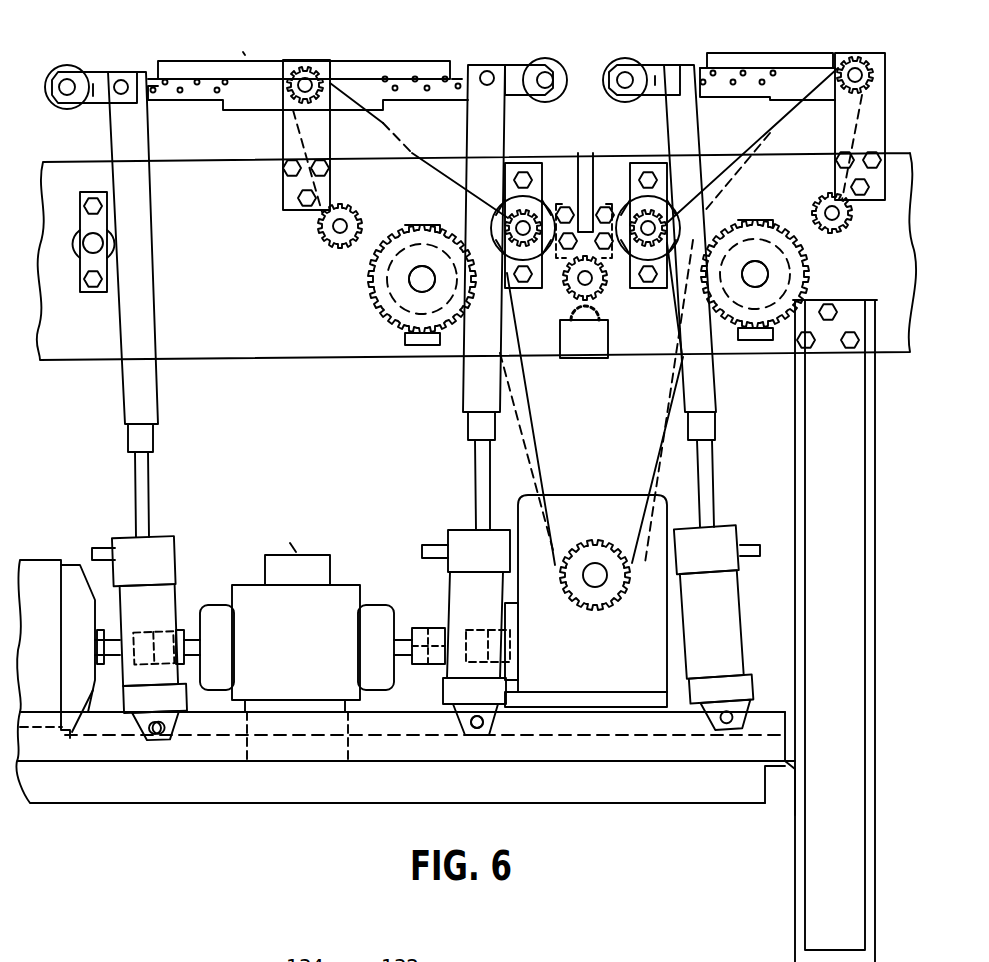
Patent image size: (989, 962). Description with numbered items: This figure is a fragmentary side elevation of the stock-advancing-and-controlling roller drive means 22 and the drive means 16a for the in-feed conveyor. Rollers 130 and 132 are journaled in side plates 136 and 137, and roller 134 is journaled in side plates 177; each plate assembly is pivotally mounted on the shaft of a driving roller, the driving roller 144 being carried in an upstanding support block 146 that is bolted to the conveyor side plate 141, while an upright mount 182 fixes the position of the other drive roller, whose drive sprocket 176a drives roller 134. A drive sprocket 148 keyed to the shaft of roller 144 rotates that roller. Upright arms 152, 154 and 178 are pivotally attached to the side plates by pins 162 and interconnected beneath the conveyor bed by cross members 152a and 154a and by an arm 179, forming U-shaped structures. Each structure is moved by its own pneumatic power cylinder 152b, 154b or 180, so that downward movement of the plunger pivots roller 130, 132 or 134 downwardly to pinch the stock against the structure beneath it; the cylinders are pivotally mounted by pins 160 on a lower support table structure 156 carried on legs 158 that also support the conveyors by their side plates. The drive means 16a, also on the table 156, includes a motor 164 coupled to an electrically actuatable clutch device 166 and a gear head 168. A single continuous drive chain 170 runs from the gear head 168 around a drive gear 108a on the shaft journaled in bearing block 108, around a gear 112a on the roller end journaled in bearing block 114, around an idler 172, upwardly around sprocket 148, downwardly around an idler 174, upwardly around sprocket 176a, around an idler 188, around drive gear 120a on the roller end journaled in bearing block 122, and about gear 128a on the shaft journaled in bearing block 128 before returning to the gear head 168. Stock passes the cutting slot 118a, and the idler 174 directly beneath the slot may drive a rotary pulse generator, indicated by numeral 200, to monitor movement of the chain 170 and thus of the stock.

The stock-advancing-and-controlling roller drive means 22 is at (242, 58).
The drive means 16a is at (294, 540).
The bearing block 108 is at (368, 313).
The drive gear 108a is at (409, 279).
The gear 112a is at (507, 225).
The bearing block 114 is at (620, 208).
The slot 118a is at (586, 154).
The drive gear 120a is at (668, 217).
The bearing block 122 is at (646, 168).
The bearing block 128 is at (795, 282).
The gear 128a is at (760, 273).
The roller 130 is at (58, 70).
The roller 132 is at (548, 62).
The roller 134 is at (621, 60).
The side plate 136 is at (173, 68).
The side plate 137 is at (403, 66).
The side plate 141 is at (186, 214).
The driving roller 144 is at (300, 68).
The upstanding support block 146 is at (290, 133).
The drive sprocket 148 is at (419, 150).
The upright arm 152 is at (112, 131).
The cross member 152a is at (131, 443).
The pneumatic power cylinder 152b is at (135, 541).
The upright arm 154 is at (472, 379).
The cross member 154a is at (472, 429).
The pneumatic power cylinder 154b is at (466, 541).
The lower support table structure 156 is at (268, 792).
The leg 158 is at (817, 845).
The pin 160 is at (160, 735).
The pin 162 is at (118, 80).
The motor 164 is at (42, 573).
The clutch device 166 is at (272, 645).
The gear head 168 is at (577, 672).
The drive chain 170 is at (527, 446).
The idler 172 is at (318, 240).
The idler 174 is at (602, 294).
The drive sprocket 176a is at (855, 60).
The side plate 177 is at (728, 58).
The upright arm 178 is at (712, 379).
The arm 179 is at (712, 429).
The power cylinder 180 is at (730, 540).
The upright mount 182 is at (842, 126).
The idler 188 is at (846, 225).
The rotary pulse generator location 200 is at (592, 340).